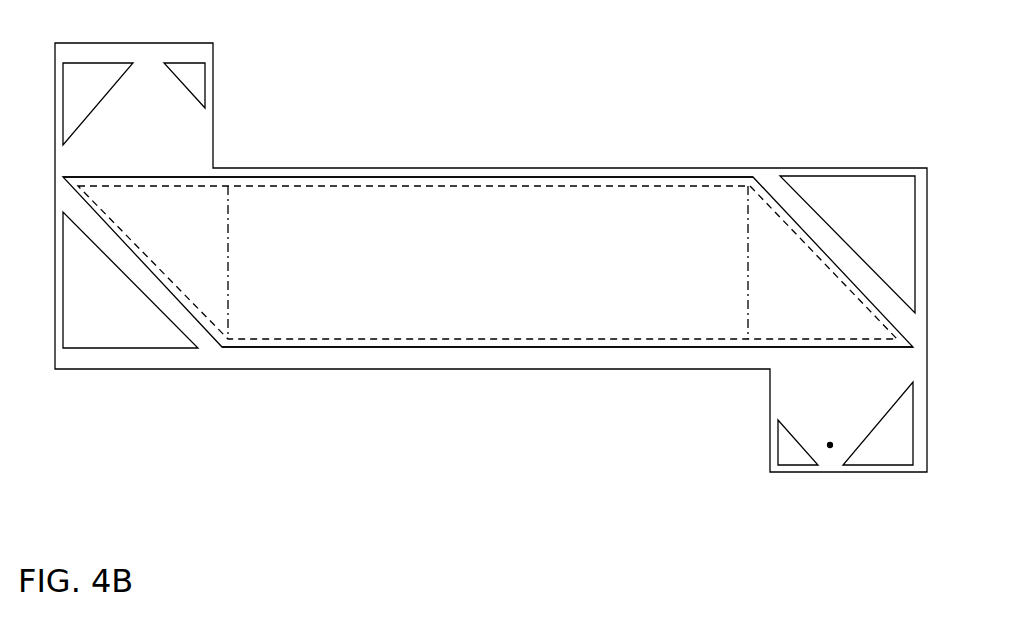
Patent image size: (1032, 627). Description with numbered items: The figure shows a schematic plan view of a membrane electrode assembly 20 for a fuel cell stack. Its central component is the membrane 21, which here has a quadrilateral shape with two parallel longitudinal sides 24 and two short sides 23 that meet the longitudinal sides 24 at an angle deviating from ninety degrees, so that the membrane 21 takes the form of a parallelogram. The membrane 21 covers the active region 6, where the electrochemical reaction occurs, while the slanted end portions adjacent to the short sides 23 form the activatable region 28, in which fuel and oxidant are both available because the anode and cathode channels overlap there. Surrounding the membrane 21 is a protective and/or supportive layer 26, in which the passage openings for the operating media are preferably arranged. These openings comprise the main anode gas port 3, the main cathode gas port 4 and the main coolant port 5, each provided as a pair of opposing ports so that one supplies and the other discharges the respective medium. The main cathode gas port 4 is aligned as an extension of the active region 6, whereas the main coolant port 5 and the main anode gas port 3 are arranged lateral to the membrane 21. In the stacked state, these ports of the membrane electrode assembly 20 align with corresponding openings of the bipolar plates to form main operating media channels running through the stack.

The membrane electrode assembly 20 is at (864, 99).
The membrane 21 is at (485, 209).
The longitudinal sides 24 is at (375, 159).
The short sides 23 is at (150, 244).
The activatable region 28 is at (492, 262).
The active region 6 is at (527, 264).
The main coolant port 5 is at (488, 264).
The main anode gas port 3 is at (491, 264).
The main cathode gas port 4 is at (489, 262).
The protective and/or supportive layer 26 is at (830, 447).